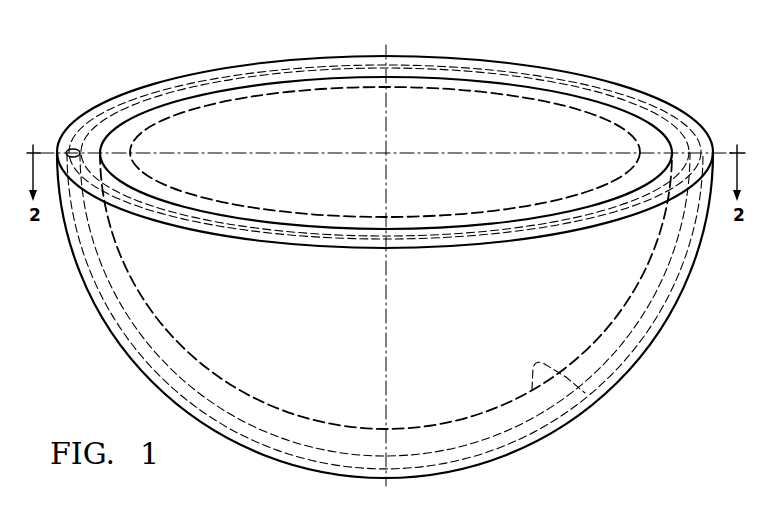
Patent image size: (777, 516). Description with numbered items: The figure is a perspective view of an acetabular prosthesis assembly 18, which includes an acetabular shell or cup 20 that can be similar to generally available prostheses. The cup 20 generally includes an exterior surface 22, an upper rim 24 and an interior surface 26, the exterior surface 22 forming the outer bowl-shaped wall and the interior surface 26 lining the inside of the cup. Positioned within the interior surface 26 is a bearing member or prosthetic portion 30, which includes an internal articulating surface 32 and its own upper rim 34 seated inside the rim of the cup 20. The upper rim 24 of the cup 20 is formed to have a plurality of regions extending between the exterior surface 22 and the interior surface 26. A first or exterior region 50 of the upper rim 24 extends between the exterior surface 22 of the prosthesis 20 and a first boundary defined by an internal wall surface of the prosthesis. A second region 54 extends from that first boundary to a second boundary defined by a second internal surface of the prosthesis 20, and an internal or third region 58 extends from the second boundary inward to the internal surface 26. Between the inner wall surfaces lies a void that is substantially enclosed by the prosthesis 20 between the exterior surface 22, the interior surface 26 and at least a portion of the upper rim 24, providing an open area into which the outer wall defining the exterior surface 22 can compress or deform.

The acetabular prosthesis assembly 18 is at (83, 98).
The acetabular shell or cup 20 is at (66, 128).
The exterior surface 22 is at (657, 341).
The upper rim 24 is at (238, 81).
The interior surface 26 is at (585, 393).
The bearing member 30 is at (472, 90).
The internal articulating surface 32 is at (613, 141).
The upper rim of bearing member 34 is at (523, 92).
The first or exterior region 50 is at (700, 125).
The second region 54 is at (689, 128).
The internal or third region 58 is at (674, 134).